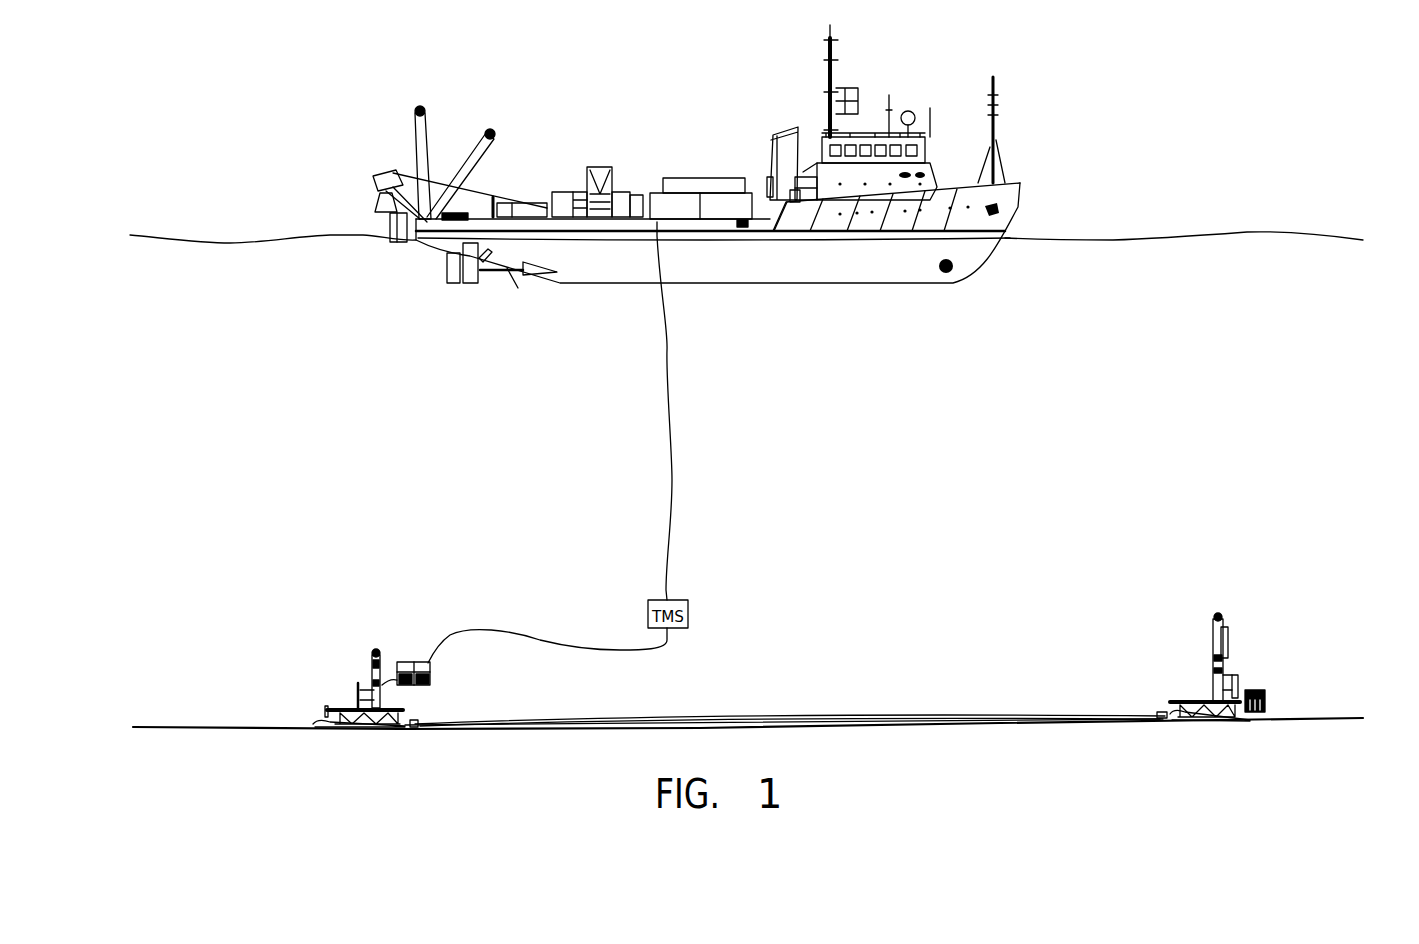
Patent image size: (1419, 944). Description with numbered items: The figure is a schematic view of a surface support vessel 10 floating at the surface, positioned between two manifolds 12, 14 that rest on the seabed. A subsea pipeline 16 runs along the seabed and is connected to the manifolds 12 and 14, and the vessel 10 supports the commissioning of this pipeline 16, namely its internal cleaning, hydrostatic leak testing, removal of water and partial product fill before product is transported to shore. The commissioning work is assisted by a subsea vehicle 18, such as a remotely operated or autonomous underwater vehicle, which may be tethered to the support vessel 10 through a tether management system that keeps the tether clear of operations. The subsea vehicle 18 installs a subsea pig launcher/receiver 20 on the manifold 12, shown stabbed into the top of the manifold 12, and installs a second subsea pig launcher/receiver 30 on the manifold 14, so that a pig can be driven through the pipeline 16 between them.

The surface support vessel 10 is at (730, 152).
The manifold 12 is at (340, 680).
The manifold 14 is at (1172, 693).
The subsea pipeline 16 is at (755, 715).
The subsea vehicle 18 is at (438, 675).
The subsea pig launcher/receiver 20 is at (374, 648).
The subsea pig launcher/receiver 30 is at (1210, 612).